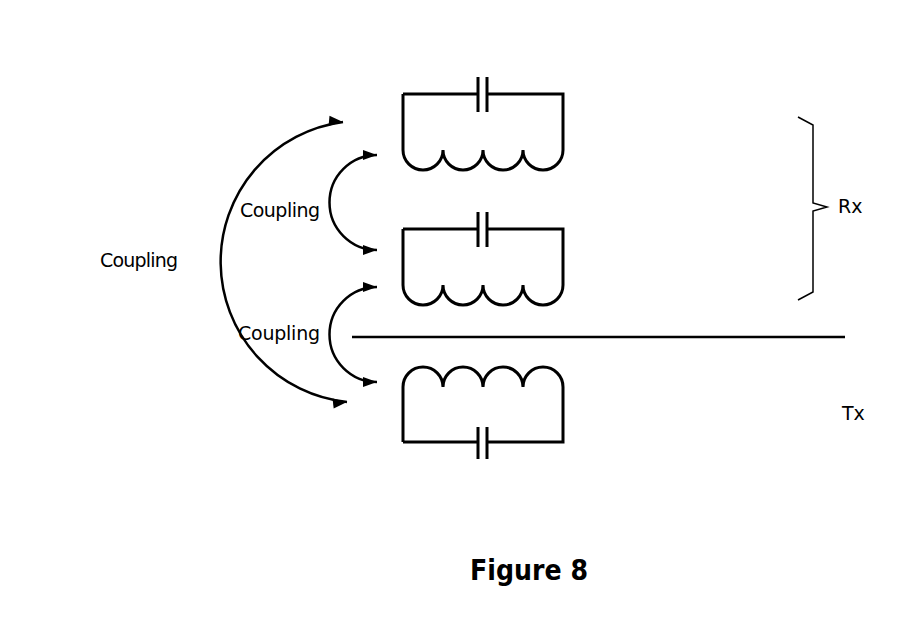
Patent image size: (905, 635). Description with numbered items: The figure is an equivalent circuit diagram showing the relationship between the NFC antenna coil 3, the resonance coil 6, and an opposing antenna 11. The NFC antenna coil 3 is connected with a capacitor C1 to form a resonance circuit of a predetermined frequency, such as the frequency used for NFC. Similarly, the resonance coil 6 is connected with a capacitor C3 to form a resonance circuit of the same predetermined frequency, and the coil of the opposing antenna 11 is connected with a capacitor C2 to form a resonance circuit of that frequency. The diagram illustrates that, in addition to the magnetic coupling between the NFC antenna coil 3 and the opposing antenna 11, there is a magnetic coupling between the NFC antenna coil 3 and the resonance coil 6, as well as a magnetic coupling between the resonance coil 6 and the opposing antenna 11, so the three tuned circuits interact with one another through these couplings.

The NFC antenna coil 3 is at (563, 166).
The resonance coil 6 is at (563, 301).
The opposing antenna 11 is at (563, 368).
The capacitor C1 is at (490, 86).
The capacitor C3 is at (490, 221).
The capacitor C2 is at (490, 450).